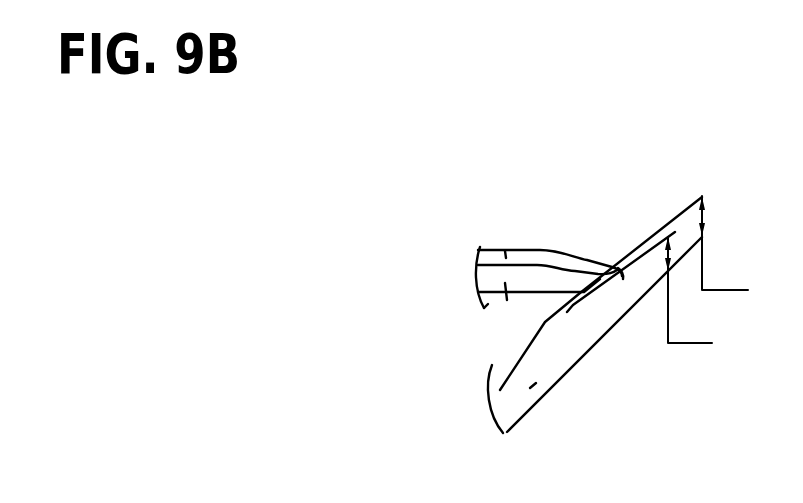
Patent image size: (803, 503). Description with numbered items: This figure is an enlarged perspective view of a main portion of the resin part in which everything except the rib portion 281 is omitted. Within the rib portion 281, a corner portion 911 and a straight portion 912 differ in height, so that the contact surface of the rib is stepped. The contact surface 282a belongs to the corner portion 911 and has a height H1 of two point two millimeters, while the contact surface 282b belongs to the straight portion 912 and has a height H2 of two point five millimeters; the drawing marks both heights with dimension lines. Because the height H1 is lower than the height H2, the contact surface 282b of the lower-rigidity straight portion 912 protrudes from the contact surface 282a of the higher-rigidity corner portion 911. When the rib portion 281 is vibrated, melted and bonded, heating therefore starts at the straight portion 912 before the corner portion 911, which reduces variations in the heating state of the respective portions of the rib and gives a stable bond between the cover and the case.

The rib portion 281 is at (480, 230).
The contact surface of the corner portion 282a is at (619, 270).
The contact surface of the straight portion 282b is at (505, 258).
The corner portion 911 is at (623, 278).
The straight portion 912 is at (484, 307).
The height of the contact surface of the corner portion H1 is at (688, 292).
The height of the contact surface of the straight portion H2 is at (723, 245).